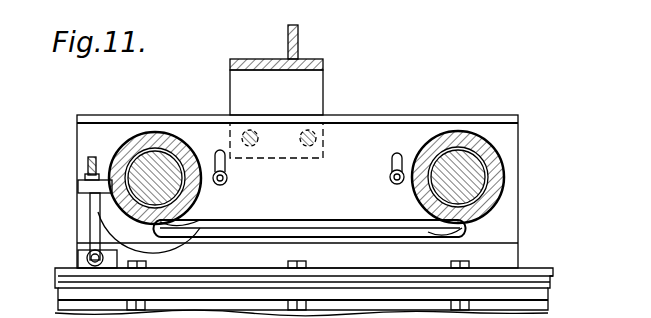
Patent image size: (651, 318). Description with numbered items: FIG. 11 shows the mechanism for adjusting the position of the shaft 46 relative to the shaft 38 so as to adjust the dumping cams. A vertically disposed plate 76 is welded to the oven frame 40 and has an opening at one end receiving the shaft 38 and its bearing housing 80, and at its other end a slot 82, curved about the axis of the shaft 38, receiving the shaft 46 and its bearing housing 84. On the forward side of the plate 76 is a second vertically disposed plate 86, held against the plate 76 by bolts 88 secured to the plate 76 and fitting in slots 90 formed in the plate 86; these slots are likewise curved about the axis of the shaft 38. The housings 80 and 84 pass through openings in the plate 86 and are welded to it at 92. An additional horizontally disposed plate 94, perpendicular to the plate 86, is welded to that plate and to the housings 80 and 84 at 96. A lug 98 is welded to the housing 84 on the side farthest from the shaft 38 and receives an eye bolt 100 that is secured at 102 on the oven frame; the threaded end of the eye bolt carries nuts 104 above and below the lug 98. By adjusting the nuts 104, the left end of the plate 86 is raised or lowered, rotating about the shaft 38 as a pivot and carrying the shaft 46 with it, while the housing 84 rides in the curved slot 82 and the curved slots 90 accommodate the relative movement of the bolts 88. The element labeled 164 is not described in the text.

The shaft 38 is at (478, 162).
The oven frame 40 is at (525, 285).
The shaft 46 is at (140, 135).
The vertically disposed plate 76 is at (477, 113).
The bearing housing 80 is at (500, 193).
The slot 82 is at (172, 243).
The bearing housing 84 is at (152, 130).
The vertically disposed plate 86 is at (520, 221).
The bolts 88 is at (228, 182).
The slots 90 is at (219, 150).
The welds 92 is at (128, 150).
The plate 94 is at (313, 222).
The welds 96 is at (178, 226).
The lug 98 is at (78, 187).
The eye bolt 100 is at (95, 230).
The securing point 102 is at (88, 258).
The nuts 104 is at (78, 188).
The stem 164 is at (312, 62).